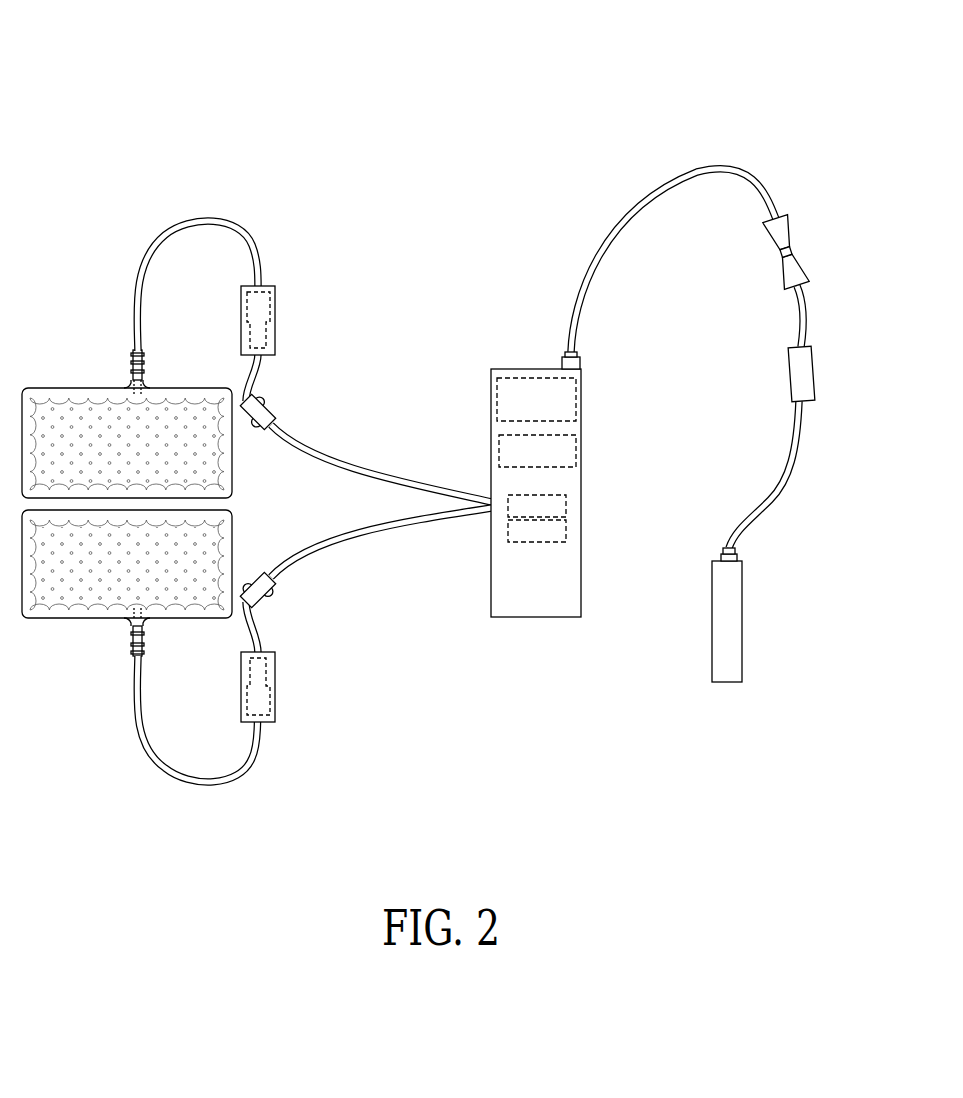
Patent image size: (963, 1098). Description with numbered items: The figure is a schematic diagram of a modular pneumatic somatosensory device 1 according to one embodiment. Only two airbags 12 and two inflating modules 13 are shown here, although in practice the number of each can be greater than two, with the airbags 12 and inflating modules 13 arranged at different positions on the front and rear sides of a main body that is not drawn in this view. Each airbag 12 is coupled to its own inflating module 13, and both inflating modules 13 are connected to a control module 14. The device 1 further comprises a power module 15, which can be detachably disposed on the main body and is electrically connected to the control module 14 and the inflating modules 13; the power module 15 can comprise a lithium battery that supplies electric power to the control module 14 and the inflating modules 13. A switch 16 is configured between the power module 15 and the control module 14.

The modular pneumatic somatosensory device 1 is at (114, 47).
The airbag 12 is at (77, 388).
The inflating module 13 is at (276, 323).
The control module 14 is at (582, 455).
The power module 15 is at (733, 636).
The switch 16 is at (812, 379).